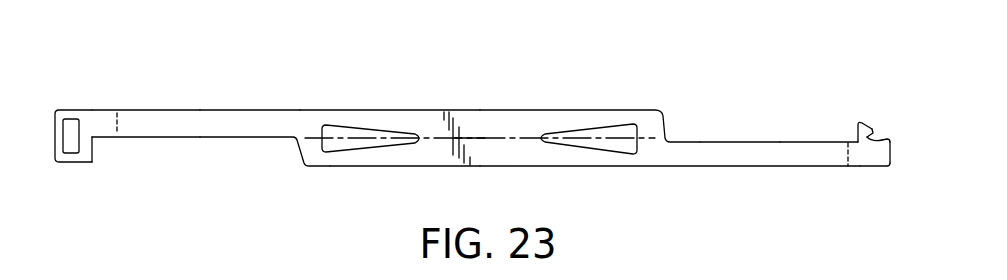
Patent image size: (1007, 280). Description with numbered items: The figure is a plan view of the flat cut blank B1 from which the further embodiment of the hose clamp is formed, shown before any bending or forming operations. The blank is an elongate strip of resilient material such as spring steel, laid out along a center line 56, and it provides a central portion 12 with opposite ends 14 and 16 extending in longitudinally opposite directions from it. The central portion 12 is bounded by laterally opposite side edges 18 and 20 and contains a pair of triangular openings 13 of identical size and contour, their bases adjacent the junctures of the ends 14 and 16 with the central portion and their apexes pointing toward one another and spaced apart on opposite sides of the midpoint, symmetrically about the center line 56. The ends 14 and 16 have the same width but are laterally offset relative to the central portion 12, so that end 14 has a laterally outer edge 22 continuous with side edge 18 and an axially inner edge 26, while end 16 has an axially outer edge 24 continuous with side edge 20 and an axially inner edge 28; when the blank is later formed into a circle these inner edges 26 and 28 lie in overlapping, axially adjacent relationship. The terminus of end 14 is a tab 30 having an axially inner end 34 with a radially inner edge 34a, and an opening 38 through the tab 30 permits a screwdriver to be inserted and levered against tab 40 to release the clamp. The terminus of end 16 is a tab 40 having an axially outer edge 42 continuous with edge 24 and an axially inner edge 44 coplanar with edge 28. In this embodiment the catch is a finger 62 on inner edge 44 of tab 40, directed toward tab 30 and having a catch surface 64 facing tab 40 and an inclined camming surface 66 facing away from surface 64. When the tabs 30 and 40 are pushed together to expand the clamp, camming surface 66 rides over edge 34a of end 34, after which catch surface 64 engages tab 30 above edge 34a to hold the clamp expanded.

The central portion 12 is at (548, 100).
The triangular openings 13 is at (335, 128).
The end 14 is at (257, 100).
The end 16 is at (710, 132).
The side edge 18 is at (380, 110).
The side edge 20 is at (373, 167).
The laterally outer edge 22 is at (201, 110).
The axially outer edge 24 is at (745, 168).
The axially inner edge 26 is at (218, 138).
The axially inner edge 28 is at (746, 142).
The tab 30 is at (79, 100).
The axially inner end 34 is at (65, 160).
The radially inner edge 34a is at (95, 150).
The opening 38 is at (72, 148).
The tab 40 is at (883, 176).
The axially outer edge 42 is at (870, 167).
The axially inner edge 44 is at (887, 138).
The center line 56 is at (483, 138).
The finger 62 is at (849, 107).
The catch surface 64 is at (870, 133).
The camming surface 66 is at (866, 126).
The cut blank B1 is at (510, 80).